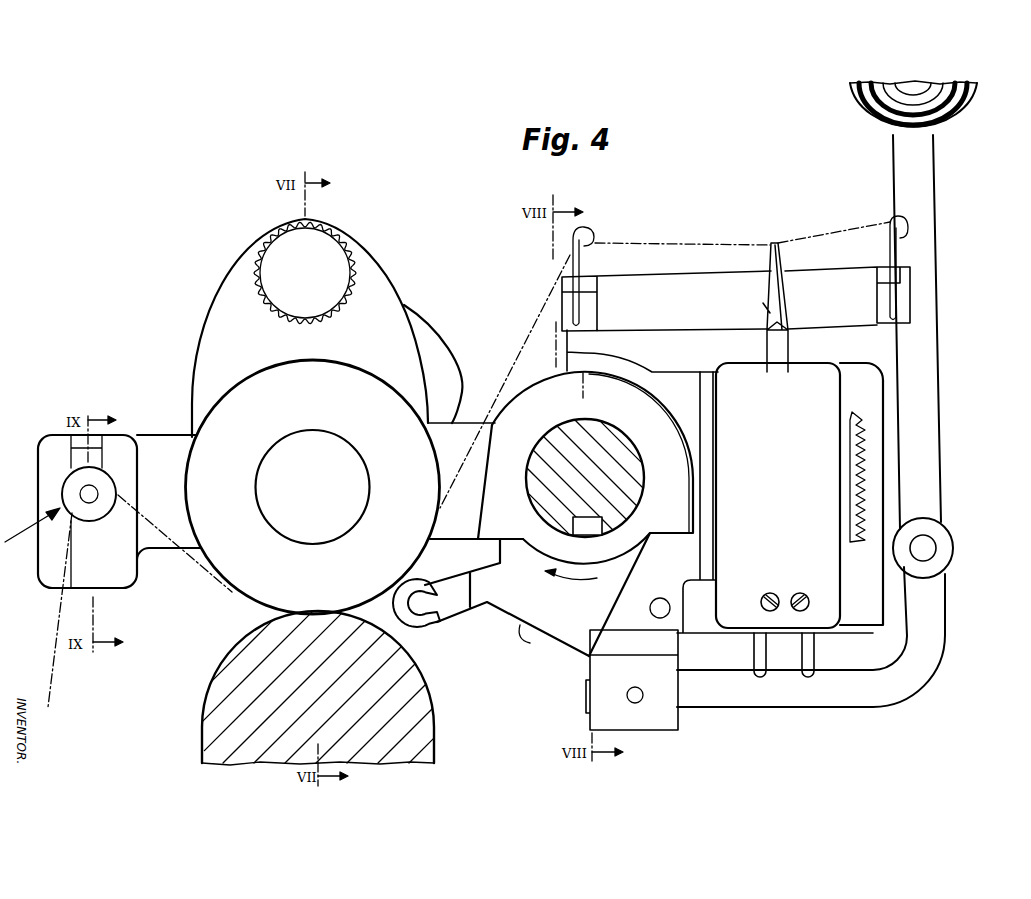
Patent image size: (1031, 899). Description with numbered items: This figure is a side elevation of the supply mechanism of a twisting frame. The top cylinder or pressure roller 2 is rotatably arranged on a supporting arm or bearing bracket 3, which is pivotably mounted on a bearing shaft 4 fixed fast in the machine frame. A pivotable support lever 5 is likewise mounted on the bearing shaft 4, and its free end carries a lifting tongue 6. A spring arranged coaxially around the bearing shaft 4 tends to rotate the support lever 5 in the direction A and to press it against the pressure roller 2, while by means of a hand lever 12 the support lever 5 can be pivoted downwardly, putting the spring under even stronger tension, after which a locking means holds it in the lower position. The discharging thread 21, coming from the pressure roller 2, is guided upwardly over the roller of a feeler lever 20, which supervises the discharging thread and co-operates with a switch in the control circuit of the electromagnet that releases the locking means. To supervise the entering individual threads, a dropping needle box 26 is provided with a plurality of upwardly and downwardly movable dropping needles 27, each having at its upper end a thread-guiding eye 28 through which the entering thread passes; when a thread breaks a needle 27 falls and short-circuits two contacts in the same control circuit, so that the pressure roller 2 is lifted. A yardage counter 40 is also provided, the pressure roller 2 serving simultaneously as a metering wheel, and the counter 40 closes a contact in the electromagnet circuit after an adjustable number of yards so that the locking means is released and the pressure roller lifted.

The pressure roller 2 is at (245, 578).
The bearing bracket 3 is at (167, 440).
The bearing shaft 4 is at (570, 460).
The support lever 5 is at (518, 600).
The lifting tongue 6 is at (430, 616).
The workpiece cylinder i is at (420, 746).
The hand lever 12 is at (930, 400).
The feeler lever 20 is at (32, 535).
The discharging thread 21 is at (62, 607).
The dropping needle box 26 is at (815, 462).
The dropping needle 27 is at (778, 347).
The thread-guiding eye 28 is at (762, 247).
The yardage counter 40 is at (372, 286).